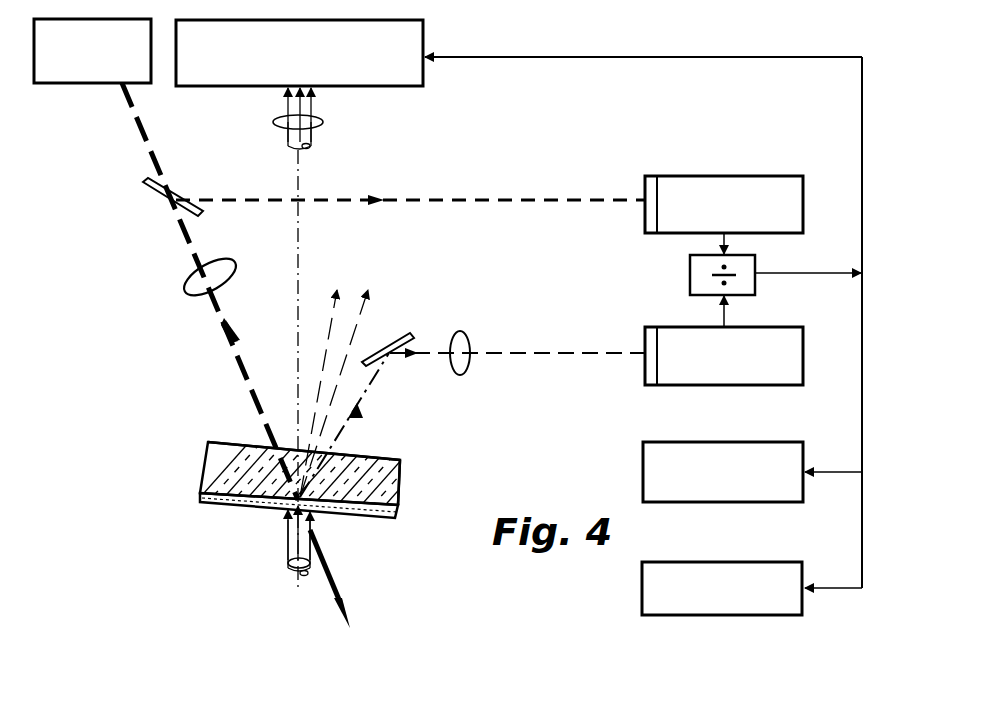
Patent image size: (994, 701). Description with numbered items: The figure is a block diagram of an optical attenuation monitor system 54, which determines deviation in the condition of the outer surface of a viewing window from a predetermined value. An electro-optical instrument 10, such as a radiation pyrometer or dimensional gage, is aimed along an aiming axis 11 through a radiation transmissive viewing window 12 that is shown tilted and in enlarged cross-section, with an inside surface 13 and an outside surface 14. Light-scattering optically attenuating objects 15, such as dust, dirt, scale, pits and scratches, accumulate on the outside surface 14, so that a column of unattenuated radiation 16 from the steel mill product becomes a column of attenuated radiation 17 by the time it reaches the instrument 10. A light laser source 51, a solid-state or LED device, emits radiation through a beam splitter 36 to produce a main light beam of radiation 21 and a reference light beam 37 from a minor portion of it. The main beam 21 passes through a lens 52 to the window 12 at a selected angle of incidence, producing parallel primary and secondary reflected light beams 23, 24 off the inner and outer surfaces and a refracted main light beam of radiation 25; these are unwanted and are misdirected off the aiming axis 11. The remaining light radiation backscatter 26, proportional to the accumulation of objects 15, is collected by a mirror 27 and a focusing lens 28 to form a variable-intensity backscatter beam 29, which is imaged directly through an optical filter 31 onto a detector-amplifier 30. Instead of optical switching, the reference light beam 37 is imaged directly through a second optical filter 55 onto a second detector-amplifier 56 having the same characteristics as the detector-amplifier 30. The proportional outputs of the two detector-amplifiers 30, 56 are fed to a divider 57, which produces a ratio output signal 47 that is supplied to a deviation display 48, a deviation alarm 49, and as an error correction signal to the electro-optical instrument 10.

The electro-optical instrument 10 is at (380, 86).
The aiming axis 11 is at (302, 268).
The viewing window 12 is at (222, 478).
The inside surface 13 is at (244, 441).
The outside surface 14 is at (400, 496).
The light-scattering optically attenuating objects 15 is at (345, 516).
The column of unattenuated radiation 16 is at (290, 563).
The column of attenuated radiation 17 is at (323, 121).
The main light beam of radiation 21 is at (190, 240).
The primary reflected light beam 23 is at (322, 330).
The secondary reflected light beam 24 is at (355, 325).
The refracted main light beam of radiation 25 is at (342, 598).
The light radiation backscatter 26 is at (362, 398).
The mirror 27 is at (385, 346).
The focusing lens 28 is at (467, 335).
The backscatter beam 29 is at (520, 353).
The detector-amplifier 30 is at (683, 385).
The optical filter 31 is at (645, 342).
The beam splitter 36 is at (152, 196).
The reference light beam 37 is at (548, 200).
The ratio output signal 47 is at (790, 273).
The deviation display 48 is at (698, 442).
The deviation alarm 49 is at (693, 562).
The light laser source 51 is at (84, 84).
The lens 52 is at (196, 296).
The optical attenuation monitor system 54 is at (640, 125).
The optical filter 55 is at (645, 196).
The second detector-amplifier 56 is at (718, 176).
The divider 57 is at (690, 270).